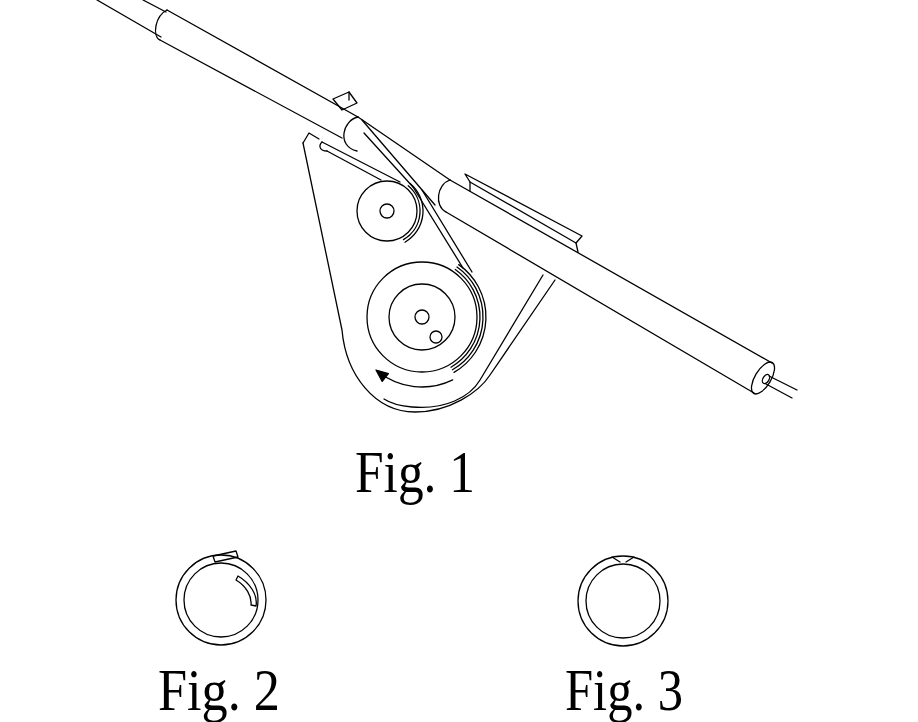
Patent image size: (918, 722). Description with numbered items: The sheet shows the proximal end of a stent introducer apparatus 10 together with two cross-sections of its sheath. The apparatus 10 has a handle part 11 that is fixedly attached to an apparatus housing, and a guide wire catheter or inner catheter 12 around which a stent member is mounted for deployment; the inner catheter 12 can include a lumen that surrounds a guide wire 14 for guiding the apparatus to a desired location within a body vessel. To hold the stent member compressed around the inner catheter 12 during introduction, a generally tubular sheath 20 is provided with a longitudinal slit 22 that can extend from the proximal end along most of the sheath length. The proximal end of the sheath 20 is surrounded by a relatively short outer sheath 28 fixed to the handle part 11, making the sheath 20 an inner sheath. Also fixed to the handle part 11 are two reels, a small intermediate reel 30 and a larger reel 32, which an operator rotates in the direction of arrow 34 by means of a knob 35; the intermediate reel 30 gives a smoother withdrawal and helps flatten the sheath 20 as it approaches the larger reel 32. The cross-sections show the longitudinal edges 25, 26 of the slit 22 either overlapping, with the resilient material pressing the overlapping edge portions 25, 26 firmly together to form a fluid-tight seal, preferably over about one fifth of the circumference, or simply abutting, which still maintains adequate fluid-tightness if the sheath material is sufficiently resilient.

In FIG. 1, the stent introducer apparatus 10 is at (558, 161).
In FIG. 1, the handle part 11 is at (515, 313).
In FIG. 1, the inner catheter 12 is at (622, 284).
In FIG. 1, the guide wire 14 is at (785, 384).
In FIG. 1, the sheath 20 is at (362, 162).
In FIG. 2, the sheath 20 is at (156, 583).
In FIG. 3, the sheath 20 is at (558, 582).
In FIG. 1, the longitudinal slit 22 is at (378, 133).
In FIG. 2, the longitudinal slit 22 is at (240, 562).
In FIG. 3, the longitudinal slit 22 is at (623, 558).
In FIG. 2, the overlapping edge portion 25 is at (240, 578).
In FIG. 3, the overlapping edge portion 25 is at (617, 558).
In FIG. 2, the overlapping edge portion 26 is at (223, 552).
In FIG. 3, the overlapping edge portion 26 is at (633, 558).
In FIG. 1, the outer sheath 28 is at (240, 54).
In FIG. 1, the small intermediate reel 30 is at (375, 224).
In FIG. 1, the larger reel 32 is at (455, 343).
In FIG. 1, the arrow 34 is at (418, 388).
In FIG. 1, the knob 35 is at (441, 341).